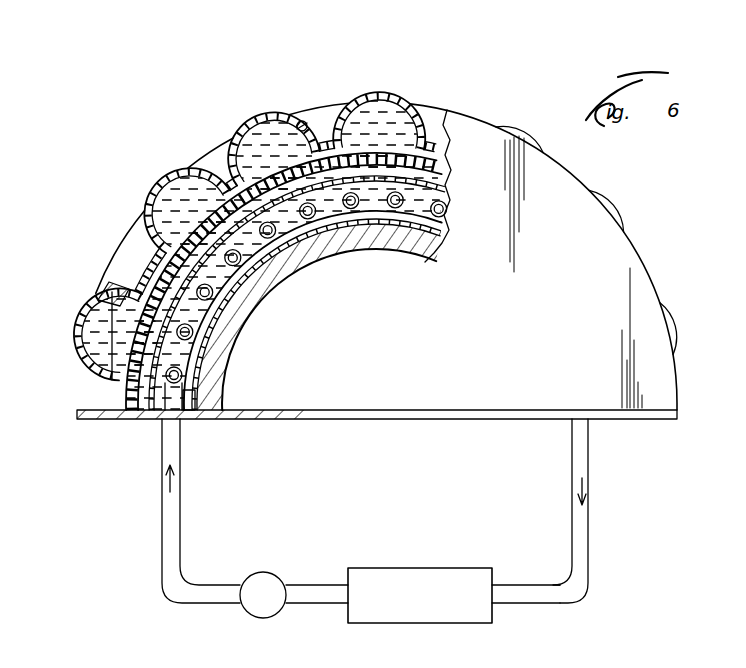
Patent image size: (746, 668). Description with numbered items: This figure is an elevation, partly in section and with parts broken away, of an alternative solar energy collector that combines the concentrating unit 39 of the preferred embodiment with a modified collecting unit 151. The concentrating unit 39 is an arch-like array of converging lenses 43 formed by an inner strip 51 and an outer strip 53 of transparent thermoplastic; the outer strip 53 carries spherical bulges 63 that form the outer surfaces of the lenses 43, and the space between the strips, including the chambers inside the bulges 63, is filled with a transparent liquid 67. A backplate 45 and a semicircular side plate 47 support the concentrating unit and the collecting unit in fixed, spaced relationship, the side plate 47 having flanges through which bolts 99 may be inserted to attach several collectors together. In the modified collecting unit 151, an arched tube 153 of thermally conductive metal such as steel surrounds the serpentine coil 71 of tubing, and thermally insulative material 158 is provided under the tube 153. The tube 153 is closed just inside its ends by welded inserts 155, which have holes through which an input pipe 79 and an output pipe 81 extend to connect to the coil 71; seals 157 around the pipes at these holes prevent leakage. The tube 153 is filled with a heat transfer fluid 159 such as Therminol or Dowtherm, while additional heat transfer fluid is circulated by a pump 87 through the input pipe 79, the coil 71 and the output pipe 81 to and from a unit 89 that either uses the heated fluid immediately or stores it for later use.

The energy concentrating unit 39 is at (364, 88).
The converging lenses 43 is at (220, 137).
The backplate 45 is at (219, 422).
The side plate 47 is at (550, 308).
The inner strip 51 is at (405, 150).
The outer strip 53 is at (440, 104).
The spherical bulges 63 is at (77, 328).
The transparent liquid 67 is at (100, 300).
The serpentine coil 71 is at (186, 378).
The input pipe 79 is at (160, 487).
The output pipe 81 is at (571, 462).
The pump 87 is at (266, 572).
The utilization or storage unit 89 is at (419, 568).
The bolts 99 is at (301, 120).
The modified collecting unit 151 is at (352, 112).
The arched tube 153 is at (258, 284).
The inserts 155 is at (197, 396).
The seals 157 is at (160, 412).
The thermally insulative material 158 is at (331, 238).
The heat transfer fluid 159 is at (292, 262).